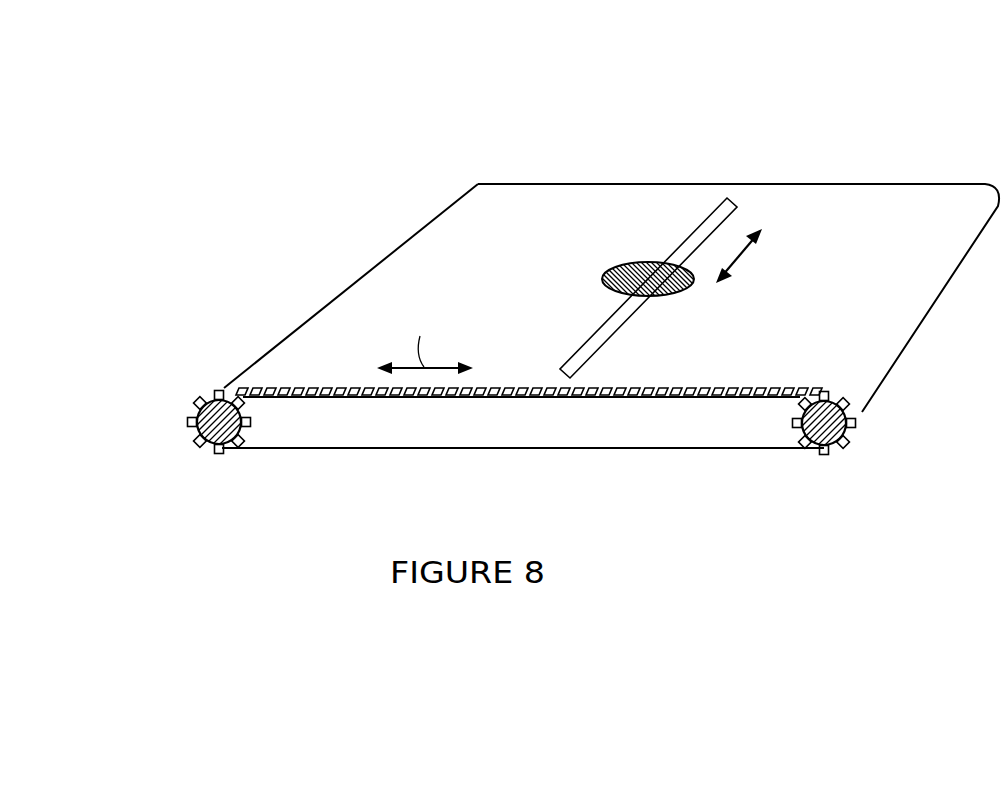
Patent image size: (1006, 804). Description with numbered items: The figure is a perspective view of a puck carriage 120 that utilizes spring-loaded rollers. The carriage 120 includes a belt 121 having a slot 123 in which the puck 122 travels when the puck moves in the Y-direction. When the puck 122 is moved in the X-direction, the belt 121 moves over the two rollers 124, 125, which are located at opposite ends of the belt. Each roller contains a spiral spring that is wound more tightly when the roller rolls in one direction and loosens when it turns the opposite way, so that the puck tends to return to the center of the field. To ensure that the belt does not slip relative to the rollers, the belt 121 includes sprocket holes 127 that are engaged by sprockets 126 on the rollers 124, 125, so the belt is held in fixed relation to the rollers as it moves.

The puck carriage 120 is at (312, 113).
The belt 121 is at (884, 184).
The puck 122 is at (628, 266).
The slot 123 is at (585, 340).
The roller 124 is at (198, 432).
The roller 125 is at (857, 414).
The sprockets 126 is at (826, 455).
The sprocket holes 127 is at (737, 394).